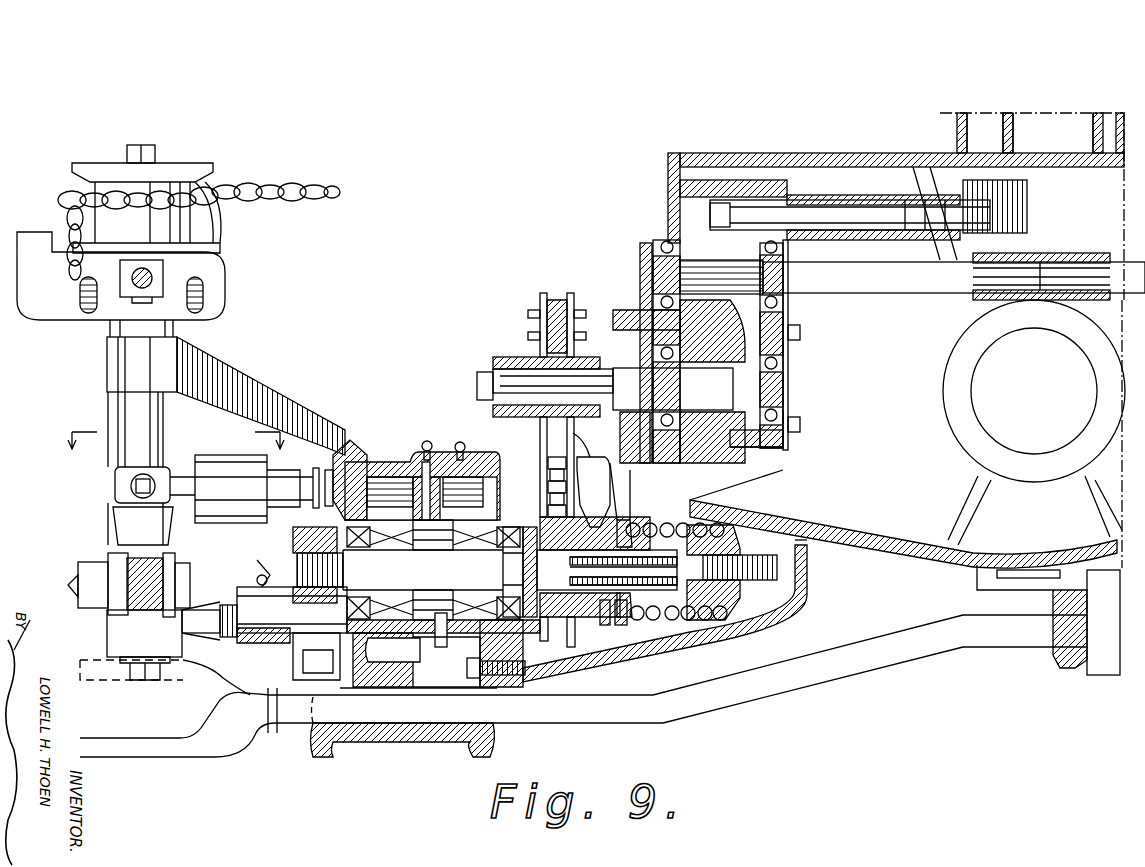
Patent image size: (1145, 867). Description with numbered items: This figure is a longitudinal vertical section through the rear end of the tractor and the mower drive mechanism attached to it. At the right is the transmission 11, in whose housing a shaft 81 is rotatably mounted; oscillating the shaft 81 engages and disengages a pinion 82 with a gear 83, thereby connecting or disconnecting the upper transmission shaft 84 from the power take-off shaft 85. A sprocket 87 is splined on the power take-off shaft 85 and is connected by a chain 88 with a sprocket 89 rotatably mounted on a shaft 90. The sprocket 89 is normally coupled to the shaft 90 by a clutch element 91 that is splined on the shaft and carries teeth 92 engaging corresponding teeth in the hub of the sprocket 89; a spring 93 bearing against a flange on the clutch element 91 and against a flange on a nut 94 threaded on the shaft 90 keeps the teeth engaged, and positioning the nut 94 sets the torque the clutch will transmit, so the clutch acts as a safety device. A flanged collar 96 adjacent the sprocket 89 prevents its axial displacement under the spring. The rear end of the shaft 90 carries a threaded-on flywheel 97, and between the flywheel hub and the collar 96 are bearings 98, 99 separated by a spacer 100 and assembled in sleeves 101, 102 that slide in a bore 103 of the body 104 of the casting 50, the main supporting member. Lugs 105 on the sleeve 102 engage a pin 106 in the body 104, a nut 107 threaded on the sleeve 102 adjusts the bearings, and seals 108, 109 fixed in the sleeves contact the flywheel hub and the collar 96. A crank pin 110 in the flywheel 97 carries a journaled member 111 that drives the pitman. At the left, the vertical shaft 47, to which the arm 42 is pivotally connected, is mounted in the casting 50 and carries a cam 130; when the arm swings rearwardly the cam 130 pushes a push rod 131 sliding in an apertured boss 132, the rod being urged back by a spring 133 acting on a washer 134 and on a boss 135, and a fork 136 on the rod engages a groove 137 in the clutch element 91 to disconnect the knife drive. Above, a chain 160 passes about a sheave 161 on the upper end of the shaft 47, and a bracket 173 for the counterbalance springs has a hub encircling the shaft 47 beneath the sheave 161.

The transmission 11 is at (896, 135).
The arm 42 is at (122, 605).
The vertical shaft 47 is at (127, 406).
The casting 50 is at (208, 360).
The shaft 81 is at (1002, 178).
The pinion 82 is at (706, 351).
The gear 83 is at (712, 478).
The upper transmission shaft 84 is at (1110, 258).
The power take-off shaft 85 is at (622, 372).
The sprocket 87 is at (553, 300).
The chain 88 is at (540, 442).
The sprocket 89 is at (570, 630).
The shaft 90 is at (565, 572).
The clutch element 91 is at (636, 622).
The clutch teeth 92 is at (605, 492).
The spring 93 is at (690, 620).
The nut 94 is at (735, 600).
The flanged collar 96 is at (535, 625).
The flywheel 97 is at (298, 540).
The bearing 98 is at (378, 548).
The bearing 99 is at (496, 560).
The spacer 100 is at (420, 592).
The sleeve 101 is at (368, 472).
The sleeve 102 is at (498, 480).
The bore 103 is at (462, 452).
The body 104 is at (428, 452).
The lugs 105 is at (385, 640).
The pin 106 is at (432, 655).
The nut 107 is at (520, 672).
The seal 108 is at (350, 548).
The seal 109 is at (505, 515).
The crank pin 110 is at (325, 614).
The member 111 is at (246, 640).
The cam 130 is at (118, 489).
The push rod 131 is at (280, 500).
The apertured boss 132 is at (222, 460).
The spring 133 is at (340, 450).
The washer 134 is at (320, 467).
The boss 135 is at (490, 445).
The fork 136 is at (582, 470).
The groove 137 is at (615, 622).
The chain 160 is at (318, 208).
The sheave 161 is at (210, 168).
The bracket 173 is at (222, 282).